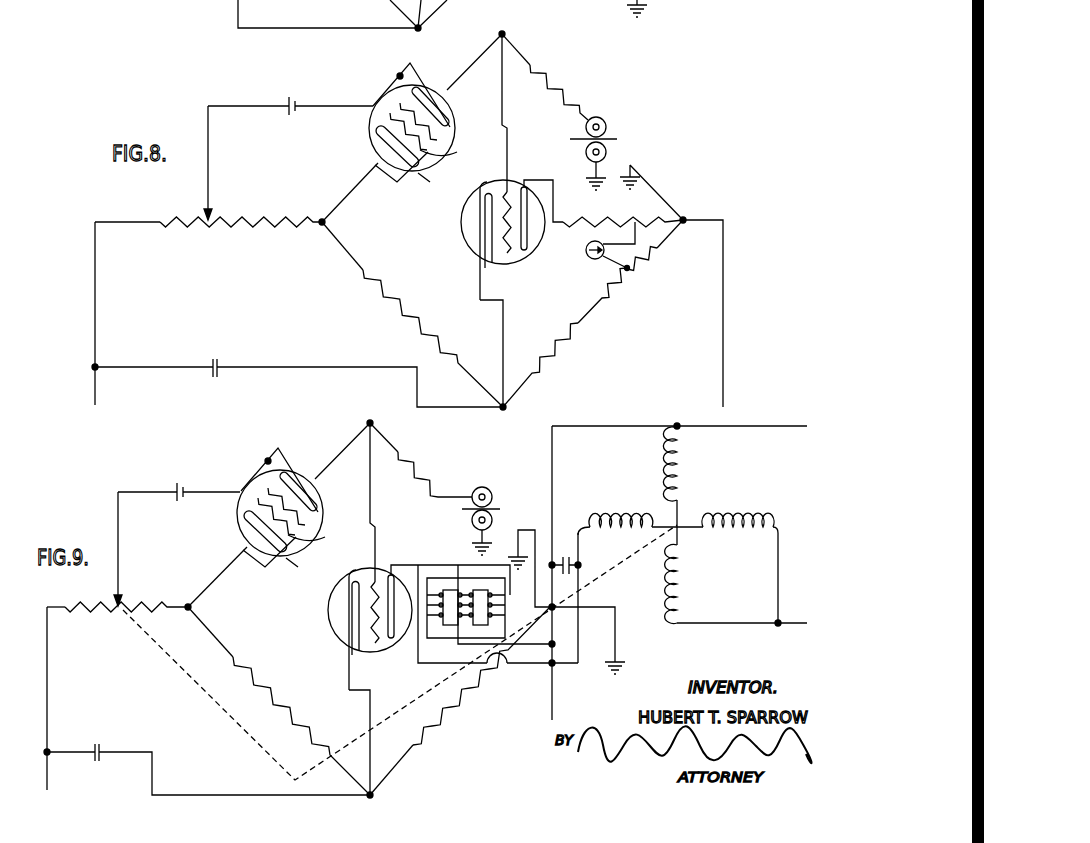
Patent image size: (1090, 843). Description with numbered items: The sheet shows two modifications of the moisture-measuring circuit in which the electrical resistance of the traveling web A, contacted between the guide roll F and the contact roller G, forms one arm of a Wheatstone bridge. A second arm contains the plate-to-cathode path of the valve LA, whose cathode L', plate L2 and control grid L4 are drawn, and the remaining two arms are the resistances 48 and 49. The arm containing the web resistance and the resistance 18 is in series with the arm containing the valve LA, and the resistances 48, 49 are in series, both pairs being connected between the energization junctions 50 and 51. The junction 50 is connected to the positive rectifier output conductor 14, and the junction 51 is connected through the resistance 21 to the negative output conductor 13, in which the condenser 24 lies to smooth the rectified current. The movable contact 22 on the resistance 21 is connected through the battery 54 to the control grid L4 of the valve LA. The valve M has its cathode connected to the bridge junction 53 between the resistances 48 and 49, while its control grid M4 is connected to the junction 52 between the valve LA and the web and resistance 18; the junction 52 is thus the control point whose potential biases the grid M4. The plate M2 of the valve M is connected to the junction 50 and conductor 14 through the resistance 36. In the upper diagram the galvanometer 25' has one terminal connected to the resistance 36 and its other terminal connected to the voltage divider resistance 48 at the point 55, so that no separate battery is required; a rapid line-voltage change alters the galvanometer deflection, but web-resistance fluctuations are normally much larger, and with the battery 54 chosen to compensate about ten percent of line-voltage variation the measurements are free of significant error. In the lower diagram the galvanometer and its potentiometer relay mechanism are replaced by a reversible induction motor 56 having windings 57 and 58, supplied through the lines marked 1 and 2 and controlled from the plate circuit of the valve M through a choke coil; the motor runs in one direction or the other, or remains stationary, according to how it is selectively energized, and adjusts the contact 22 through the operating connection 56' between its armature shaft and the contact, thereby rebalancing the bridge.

In FIG. 9, the supply conductor 1 is at (762, 426).
In FIG. 9, the supply conductor 2 is at (781, 622).
In FIG. 8, the negative output conductor 13 is at (95, 318).
In FIG. 9, the negative output conductor 13 is at (47, 690).
In FIG. 8, the positive rectifier output conductor 14 is at (724, 297).
In FIG. 9, the positive rectifier output conductor 14 is at (552, 703).
In FIG. 8, the resistance 18 is at (556, 78).
In FIG. 9, the resistance 18 is at (421, 476).
In FIG. 8, the resistance 21 is at (212, 226).
In FIG. 9, the resistance 21 is at (112, 611).
In FIG. 8, the movable contact 22 is at (205, 208).
In FIG. 9, the movable contact 22 is at (120, 600).
In FIG. 8, the condenser 24 is at (215, 358).
In FIG. 9, the condenser 24 is at (97, 744).
In FIG. 8, the galvanometer 25' is at (591, 245).
In FIG. 8, the resistance 36 is at (641, 223).
In FIG. 8, the voltage divider resistance 48 is at (630, 274).
In FIG. 9, the voltage divider resistance 48 is at (462, 703).
In FIG. 8, the resistance 49 is at (395, 302).
In FIG. 9, the resistance 49 is at (262, 686).
In FIG. 8, the energization junction 50 is at (684, 218).
In FIG. 8, the energization junction 51 is at (325, 222).
In FIG. 9, the energization junction 51 is at (191, 607).
In FIG. 8, the junction 52 is at (503, 32).
In FIG. 9, the junction 52 is at (371, 421).
In FIG. 8, the bridge junction 53 is at (503, 407).
In FIG. 9, the bridge junction 53 is at (373, 796).
In FIG. 8, the battery 54 is at (290, 96).
In FIG. 9, the battery 54 is at (179, 491).
In FIG. 8, the point 55 is at (624, 270).
In FIG. 9, the reversible electric motor 56 is at (740, 543).
In FIG. 9, the operating connection 56' is at (400, 652).
In FIG. 9, the winding 57 is at (667, 456).
In FIG. 9, the winding 58 is at (613, 519).
In FIG. 8, the valve LA is at (454, 128).
In FIG. 9, the valve LA is at (322, 517).
In FIG. 8, the cathode L' is at (383, 146).
In FIG. 9, the cathode L' is at (248, 532).
In FIG. 8, the plate L2 is at (443, 106).
In FIG. 9, the plate L2 is at (311, 494).
In FIG. 8, the control grid L4 is at (457, 152).
In FIG. 9, the control grid L4 is at (313, 543).
In FIG. 8, the valve M is at (461, 226).
In FIG. 9, the valve M is at (329, 606).
In FIG. 8, the plate M2 is at (524, 186).
In FIG. 9, the plate M2 is at (391, 574).
In FIG. 8, the control grid M4 is at (507, 253).
In FIG. 9, the control grid M4 is at (375, 643).
In FIG. 8, the contact roller G is at (599, 122).
In FIG. 9, the contact roller G is at (483, 489).
In FIG. 8, the warp A is at (616, 139).
In FIG. 9, the warp A is at (500, 508).
In FIG. 8, the guide roll F is at (586, 152).
In FIG. 9, the guide roll F is at (472, 521).